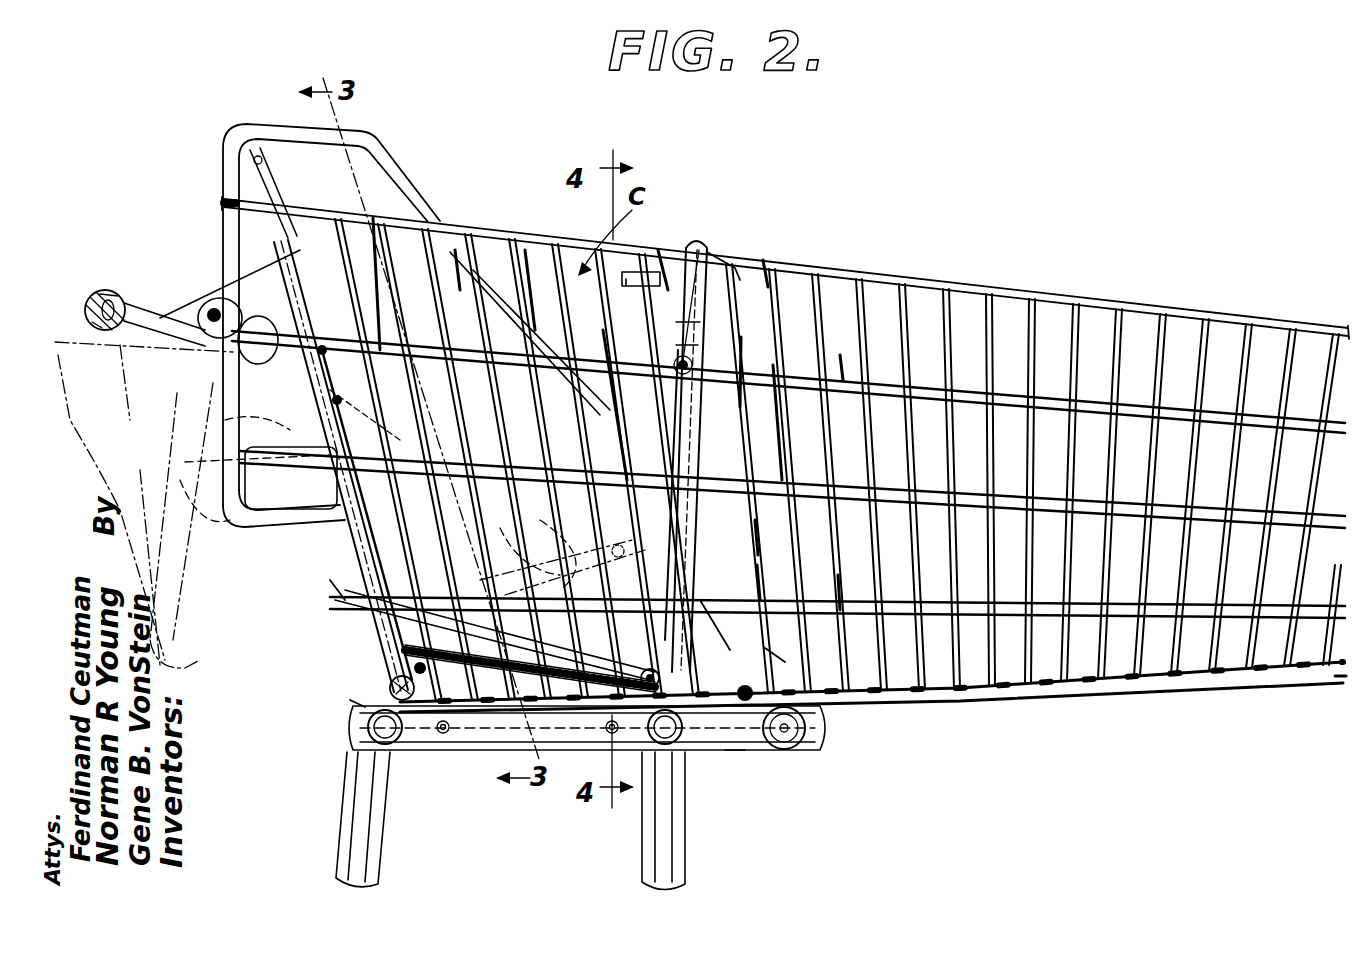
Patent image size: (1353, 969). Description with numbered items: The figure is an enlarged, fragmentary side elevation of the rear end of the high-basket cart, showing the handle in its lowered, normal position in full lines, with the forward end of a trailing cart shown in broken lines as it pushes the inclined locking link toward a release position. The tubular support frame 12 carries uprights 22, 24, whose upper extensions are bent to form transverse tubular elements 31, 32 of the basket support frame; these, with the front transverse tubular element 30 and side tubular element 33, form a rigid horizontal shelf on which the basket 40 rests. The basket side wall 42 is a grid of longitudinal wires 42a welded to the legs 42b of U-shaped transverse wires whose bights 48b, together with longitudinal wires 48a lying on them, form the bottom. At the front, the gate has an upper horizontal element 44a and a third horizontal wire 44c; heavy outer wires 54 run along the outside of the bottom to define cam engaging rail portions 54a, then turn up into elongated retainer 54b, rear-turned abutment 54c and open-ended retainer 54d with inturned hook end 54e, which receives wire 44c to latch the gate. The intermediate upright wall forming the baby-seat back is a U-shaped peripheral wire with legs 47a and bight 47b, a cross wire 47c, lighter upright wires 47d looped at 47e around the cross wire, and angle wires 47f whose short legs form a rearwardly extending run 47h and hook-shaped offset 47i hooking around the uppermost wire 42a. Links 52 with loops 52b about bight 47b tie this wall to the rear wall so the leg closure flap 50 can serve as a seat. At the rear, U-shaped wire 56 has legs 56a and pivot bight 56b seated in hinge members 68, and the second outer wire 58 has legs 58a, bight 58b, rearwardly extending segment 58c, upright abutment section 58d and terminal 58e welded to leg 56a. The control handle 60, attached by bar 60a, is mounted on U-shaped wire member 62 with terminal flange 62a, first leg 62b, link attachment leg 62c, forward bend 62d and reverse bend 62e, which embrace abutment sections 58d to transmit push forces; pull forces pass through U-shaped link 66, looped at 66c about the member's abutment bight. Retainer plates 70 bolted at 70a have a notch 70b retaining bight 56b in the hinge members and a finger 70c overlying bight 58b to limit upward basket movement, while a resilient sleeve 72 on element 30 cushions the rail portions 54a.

The support frame 12 is at (363, 819).
The upright 22 is at (684, 850).
The upright 24 is at (348, 828).
The front transverse tubular element 30 is at (798, 752).
The transverse tubular element 31 is at (686, 762).
The rear transverse tubular element 32 is at (398, 748).
The side tubular element 33 is at (736, 756).
The basket 40 is at (818, 272).
The side wall 42 is at (905, 320).
The longitudinally extending wires 42a is at (1205, 510).
The legs of U-shaped transverse wires 42b is at (1085, 365).
The upper horizontal element 44a is at (364, 512).
The third horizontal wire 44c is at (186, 461).
The legs of peripheral wire 47a is at (712, 260).
The bight of peripheral wire 47b is at (720, 612).
The horizontal cross wire 47c is at (696, 366).
The upright intermediate wires 47d is at (667, 445).
The loops 47e is at (700, 345).
The angle shaped heavy wires 47f is at (700, 322).
The rearwardly extending run 47h is at (694, 238).
The hook-shaped offset 47i is at (640, 286).
The longitudinally extending bottom wires 48a is at (1228, 672).
The bights of transverse wires 48b is at (1130, 690).
The leg closure flap 50 is at (552, 575).
The link 52 is at (495, 641).
The loop 52b is at (700, 652).
The heavy outer wires 54 is at (975, 698).
The cam engaging rail portions 54a is at (1290, 697).
The elongated retainer 54b is at (226, 636).
The rear-turned abutment 54c is at (180, 482).
The upper open-ended retainer 54d is at (291, 478).
The inturned hook end 54e is at (224, 420).
The rearwardly inclined U-shaped wire 56 is at (370, 622).
The upright legs 56a is at (340, 596).
The pivot bight 56b is at (388, 690).
The second outer wire 58 is at (383, 317).
The rearwardly inclined upright legs 58a is at (486, 244).
The bight 58b is at (733, 710).
The rearwardly extending segment 58c is at (272, 124).
The upright abutment section 58d is at (230, 240).
The forwardly turned terminal 58e is at (258, 518).
The control handle 60 is at (84, 294).
The bolt-secured bar 60a is at (108, 300).
The U-shaped wire member 62 is at (153, 314).
The flattened terminal flange 62a is at (128, 290).
The first leg 62b is at (160, 320).
The link attachment leg 62c is at (140, 372).
The forward bend 62d is at (125, 400).
The reverse bend 62e is at (262, 320).
The U-shaped link means 66 is at (378, 447).
The loops 66c is at (536, 546).
The hinge members 68 is at (385, 668).
The retainer plates 70 is at (576, 706).
The bolts 70a is at (608, 738).
The notch 70b is at (348, 703).
The forwardly extending finger 70c is at (775, 654).
The resilient sleeve 72 is at (808, 742).